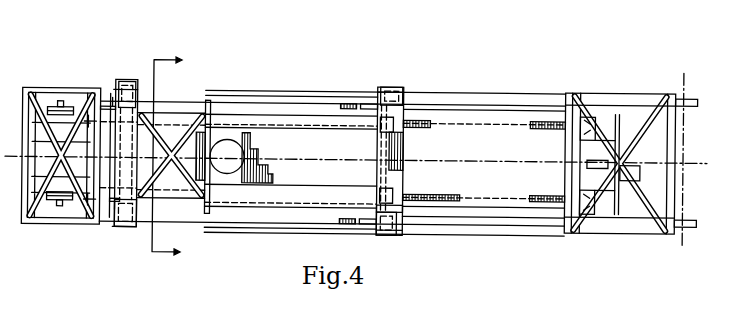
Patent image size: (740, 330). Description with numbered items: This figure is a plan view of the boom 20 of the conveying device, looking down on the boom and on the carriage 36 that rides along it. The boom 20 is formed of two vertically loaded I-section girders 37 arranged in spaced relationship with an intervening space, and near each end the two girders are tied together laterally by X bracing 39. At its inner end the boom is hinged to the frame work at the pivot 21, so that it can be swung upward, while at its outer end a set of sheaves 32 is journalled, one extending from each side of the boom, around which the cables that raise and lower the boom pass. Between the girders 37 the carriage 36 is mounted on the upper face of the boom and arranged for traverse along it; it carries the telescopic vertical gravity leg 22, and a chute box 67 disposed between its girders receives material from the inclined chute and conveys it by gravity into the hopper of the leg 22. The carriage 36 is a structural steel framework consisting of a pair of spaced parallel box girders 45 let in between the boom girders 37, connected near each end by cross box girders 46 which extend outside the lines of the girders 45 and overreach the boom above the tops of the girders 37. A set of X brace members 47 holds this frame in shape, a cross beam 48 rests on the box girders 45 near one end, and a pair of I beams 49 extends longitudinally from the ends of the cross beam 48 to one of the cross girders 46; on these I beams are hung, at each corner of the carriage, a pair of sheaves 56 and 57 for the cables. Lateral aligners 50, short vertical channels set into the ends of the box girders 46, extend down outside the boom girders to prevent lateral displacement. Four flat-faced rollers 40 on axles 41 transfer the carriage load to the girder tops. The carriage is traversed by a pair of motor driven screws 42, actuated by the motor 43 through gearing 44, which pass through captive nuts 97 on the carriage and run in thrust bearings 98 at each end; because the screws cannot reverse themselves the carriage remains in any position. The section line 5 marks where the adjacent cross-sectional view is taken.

The section line 5- 5 is at (167, 157).
The boom 20 is at (462, 233).
The pivot 21 is at (690, 100).
The vertical gravity leg 22 is at (256, 165).
The sheaves 32 is at (63, 112).
The carriage 36 is at (320, 116).
The girders 37 is at (606, 103).
The X bracing 39 is at (56, 173).
The rollers 40 is at (137, 92).
The axles 41 is at (403, 208).
The motor driven screws 42 is at (455, 125).
The motor 43 is at (630, 182).
The gearing 44 is at (596, 128).
The box girders 45 is at (289, 127).
The cross box girders 46 is at (125, 167).
The X brace members 47 is at (186, 177).
The cross beam 48 is at (207, 102).
The I beams 49 is at (276, 92).
The lateral aligners 50 is at (128, 84).
The sheave 56 is at (120, 109).
The sheave 57 is at (113, 102).
The chute box 67 is at (291, 156).
The captive nuts 97 is at (396, 122).
The thrust bearings 98 is at (88, 128).